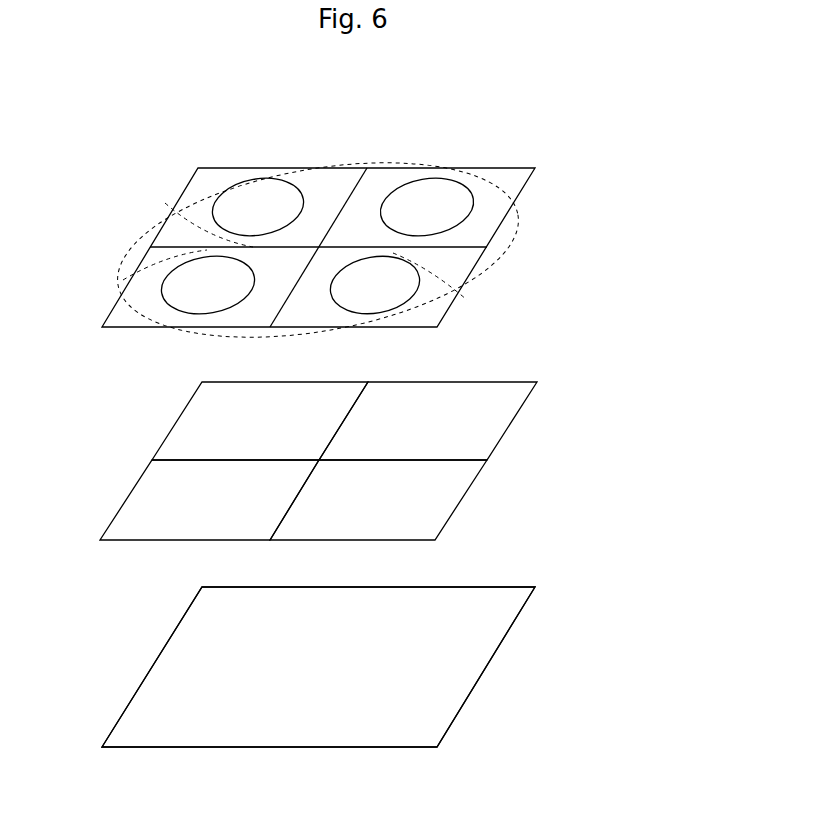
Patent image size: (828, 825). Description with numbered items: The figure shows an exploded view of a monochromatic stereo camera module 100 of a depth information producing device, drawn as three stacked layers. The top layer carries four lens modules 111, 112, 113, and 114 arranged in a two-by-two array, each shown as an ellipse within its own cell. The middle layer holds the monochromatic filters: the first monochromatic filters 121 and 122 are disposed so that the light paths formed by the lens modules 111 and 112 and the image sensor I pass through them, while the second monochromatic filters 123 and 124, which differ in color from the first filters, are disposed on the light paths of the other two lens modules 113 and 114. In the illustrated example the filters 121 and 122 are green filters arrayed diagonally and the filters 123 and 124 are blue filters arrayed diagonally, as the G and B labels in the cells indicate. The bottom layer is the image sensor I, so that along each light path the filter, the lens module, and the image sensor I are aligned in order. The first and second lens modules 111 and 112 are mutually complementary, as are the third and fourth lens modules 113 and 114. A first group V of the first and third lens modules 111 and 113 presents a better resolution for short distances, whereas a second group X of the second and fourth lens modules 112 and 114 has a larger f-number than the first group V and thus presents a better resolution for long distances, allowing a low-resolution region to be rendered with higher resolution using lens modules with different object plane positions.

The monochromatic stereo camera module 100 is at (604, 186).
The first lens module 111 is at (230, 190).
The second lens module 112 is at (422, 283).
The third lens module 113 is at (455, 181).
The fourth lens module 114 is at (165, 282).
The first monochromatic filter 121 is at (189, 420).
The first monochromatic filter 122 is at (443, 500).
The second monochromatic filter 123 is at (493, 423).
The second monochromatic filter 124 is at (145, 495).
The first group V is at (334, 161).
The second group X is at (457, 307).
The image sensor I is at (517, 620).